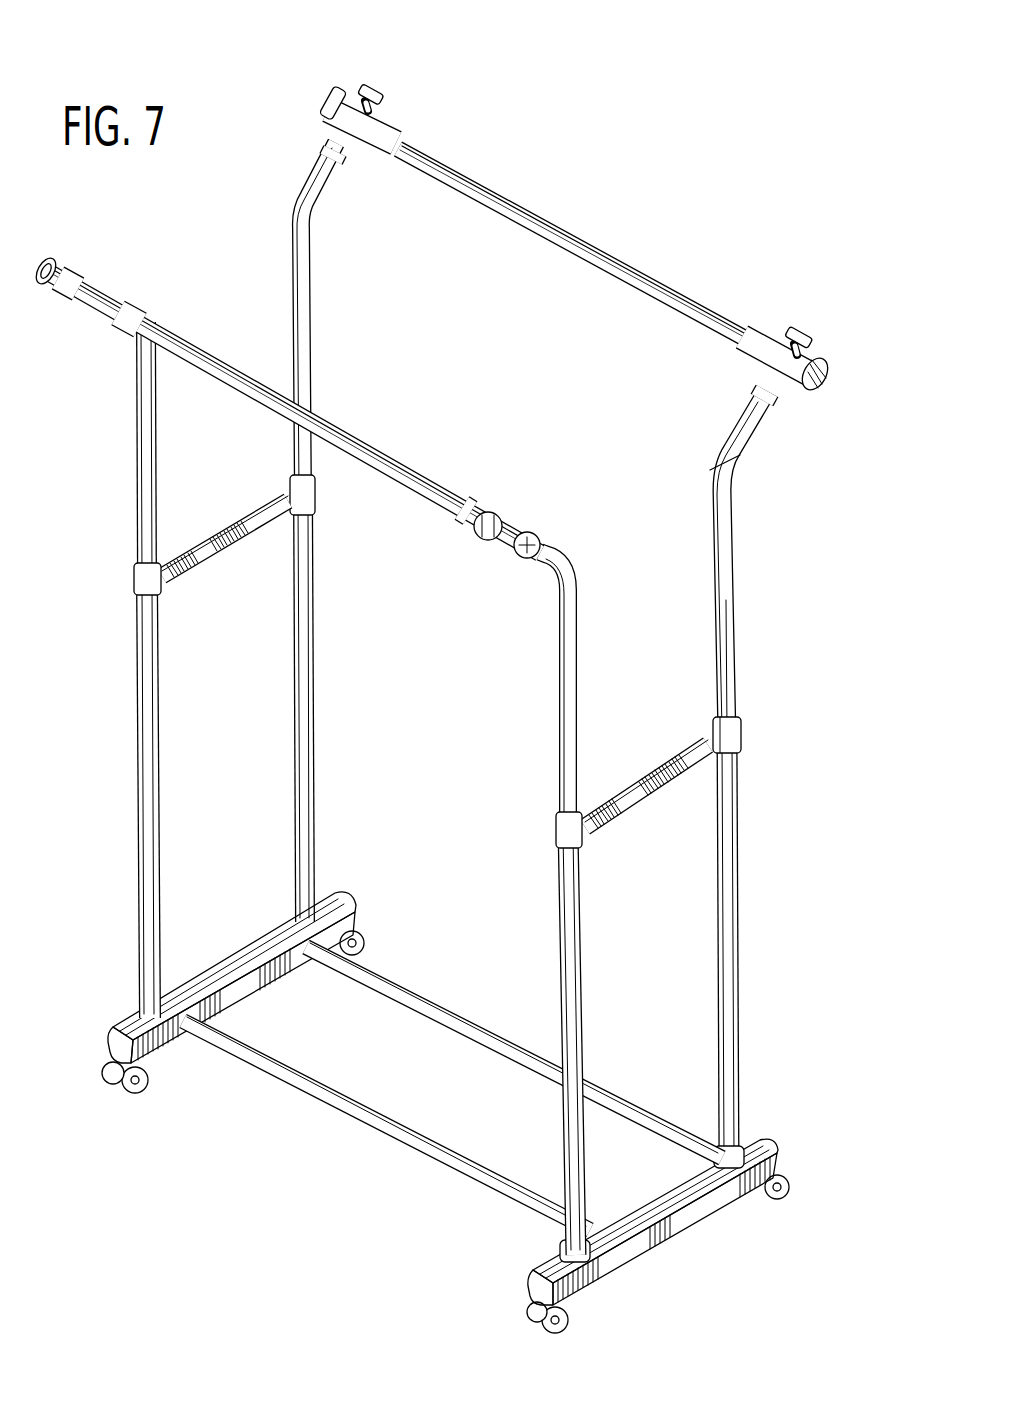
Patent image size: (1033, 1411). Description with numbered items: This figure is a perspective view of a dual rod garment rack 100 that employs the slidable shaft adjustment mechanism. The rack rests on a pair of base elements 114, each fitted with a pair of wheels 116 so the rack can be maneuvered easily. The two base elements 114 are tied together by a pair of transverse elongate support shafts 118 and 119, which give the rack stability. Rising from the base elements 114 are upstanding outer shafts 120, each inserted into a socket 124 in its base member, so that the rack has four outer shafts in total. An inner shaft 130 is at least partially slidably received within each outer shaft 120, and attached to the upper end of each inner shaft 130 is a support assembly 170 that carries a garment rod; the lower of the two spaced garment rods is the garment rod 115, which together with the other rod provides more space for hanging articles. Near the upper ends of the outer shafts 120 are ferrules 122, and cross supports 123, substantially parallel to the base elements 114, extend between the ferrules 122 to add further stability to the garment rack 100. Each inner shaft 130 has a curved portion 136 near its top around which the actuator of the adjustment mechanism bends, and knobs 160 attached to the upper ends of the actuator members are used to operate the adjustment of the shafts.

The dual rod garment rack 100 is at (593, 206).
The knob 160 is at (369, 82).
The support assembly 170 is at (768, 330).
The garment rod 115 is at (355, 436).
The curved upper section of right upright 136 is at (737, 468).
The inner shaft 130 is at (737, 595).
The ferrule 122 is at (741, 728).
The cross support 123 is at (690, 780).
The upstanding outer shaft 120 is at (742, 958).
The socket 124 is at (757, 1140).
The wheel 116 is at (790, 1182).
The base element 114 is at (682, 1171).
The transverse elongate support shaft 118 is at (405, 986).
The transverse elongate support shaft 119 is at (404, 1153).